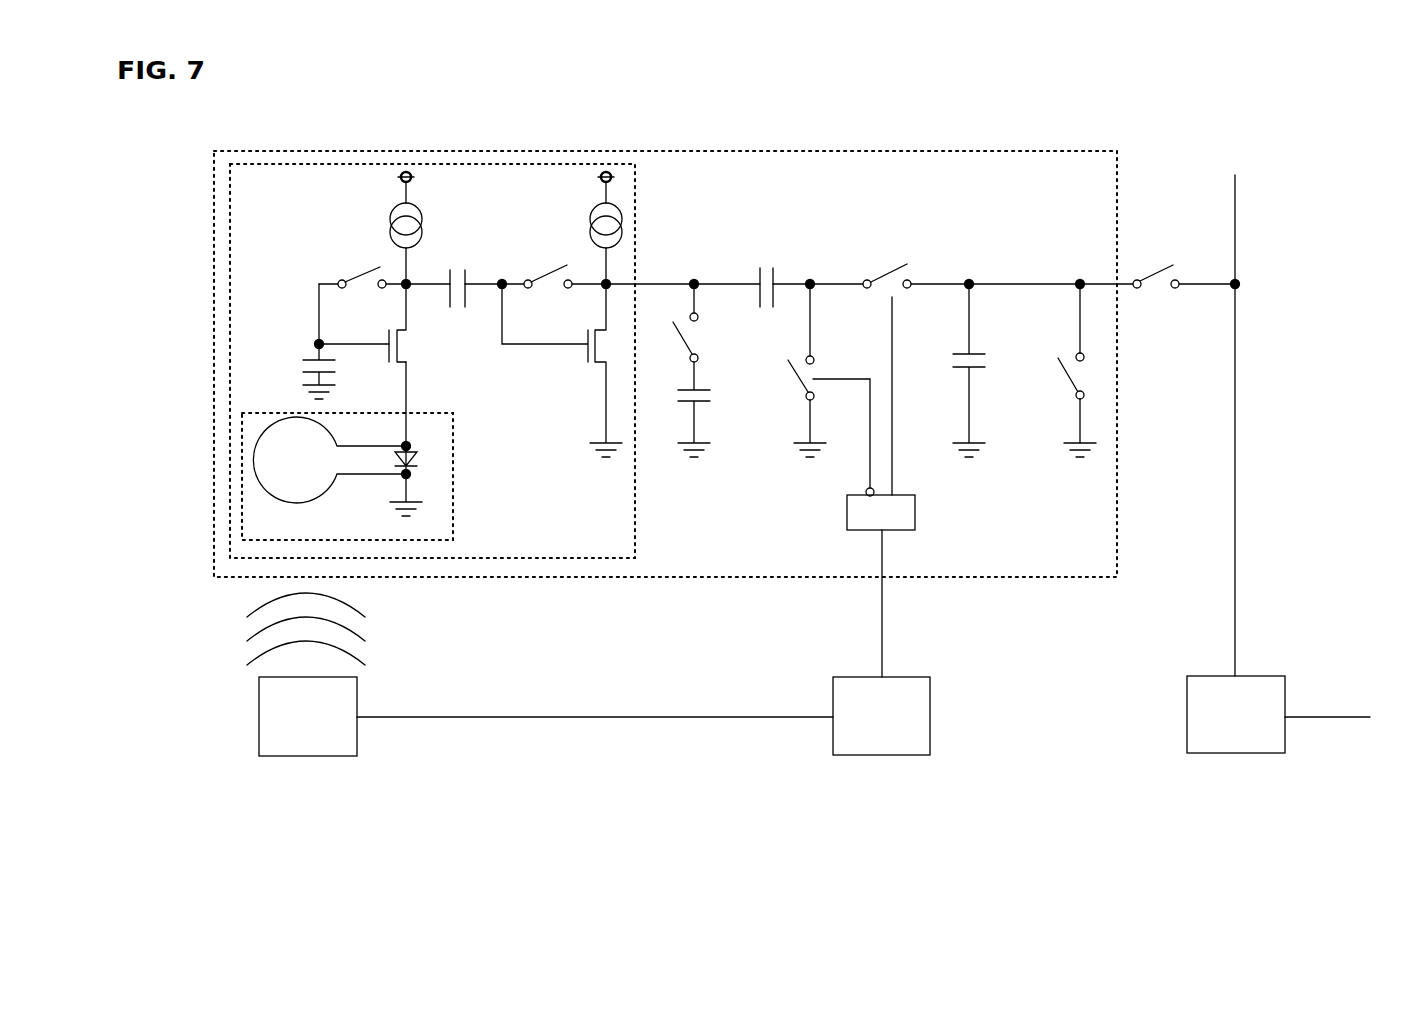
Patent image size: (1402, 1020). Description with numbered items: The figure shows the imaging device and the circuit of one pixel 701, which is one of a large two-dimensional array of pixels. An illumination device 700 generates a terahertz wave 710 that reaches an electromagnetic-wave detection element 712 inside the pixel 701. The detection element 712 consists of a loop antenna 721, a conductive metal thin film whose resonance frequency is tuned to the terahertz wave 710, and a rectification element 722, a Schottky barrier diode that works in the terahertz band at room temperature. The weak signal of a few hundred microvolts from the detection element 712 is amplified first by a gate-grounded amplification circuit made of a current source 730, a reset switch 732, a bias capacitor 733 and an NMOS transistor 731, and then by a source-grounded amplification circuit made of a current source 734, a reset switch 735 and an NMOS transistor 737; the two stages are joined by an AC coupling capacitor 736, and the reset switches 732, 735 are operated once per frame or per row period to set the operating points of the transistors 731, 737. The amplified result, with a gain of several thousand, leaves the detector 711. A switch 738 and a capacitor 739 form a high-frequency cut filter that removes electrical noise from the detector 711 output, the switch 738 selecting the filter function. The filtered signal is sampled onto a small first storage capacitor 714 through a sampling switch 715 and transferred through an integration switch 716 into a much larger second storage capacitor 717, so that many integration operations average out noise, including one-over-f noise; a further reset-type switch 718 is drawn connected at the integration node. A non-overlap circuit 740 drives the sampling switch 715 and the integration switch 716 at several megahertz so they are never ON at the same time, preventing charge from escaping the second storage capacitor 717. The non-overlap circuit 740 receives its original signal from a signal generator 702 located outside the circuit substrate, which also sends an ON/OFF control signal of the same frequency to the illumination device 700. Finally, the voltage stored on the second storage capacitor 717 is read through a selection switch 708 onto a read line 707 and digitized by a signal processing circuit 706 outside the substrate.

The illumination device 700 is at (255, 732).
The pixel 701 is at (877, 150).
The signal generator 702 is at (930, 745).
The signal processing circuit 706 is at (1243, 758).
The read line 707 is at (1237, 477).
The selection switch 708 is at (1157, 261).
The terahertz wave 710 is at (233, 632).
The detector 711 is at (635, 162).
The electromagnetic-wave detection element 712 is at (268, 410).
The first storage capacitor Cs 714 is at (780, 257).
The switch SWs 715 is at (802, 390).
The switch SWi 716 is at (895, 351).
The second storage capacitor Ci 717 is at (947, 369).
The reset switch SWr 718 is at (1044, 369).
The loop antenna 721 is at (255, 462).
The rectification element 722 is at (418, 466).
The current source 730 is at (380, 230).
The NMOS transistor 731 is at (408, 348).
The reset switch 732 is at (349, 270).
The bias capacitor 733 is at (319, 341).
The current source 734 is at (581, 230).
The reset switch 735 is at (547, 265).
The AC coupling capacitor 736 is at (478, 275).
The NMOS transistor 737 is at (590, 371).
The switch 738 is at (711, 321).
The capacitor 739 is at (677, 409).
The non-overlap circuit 740 is at (915, 513).